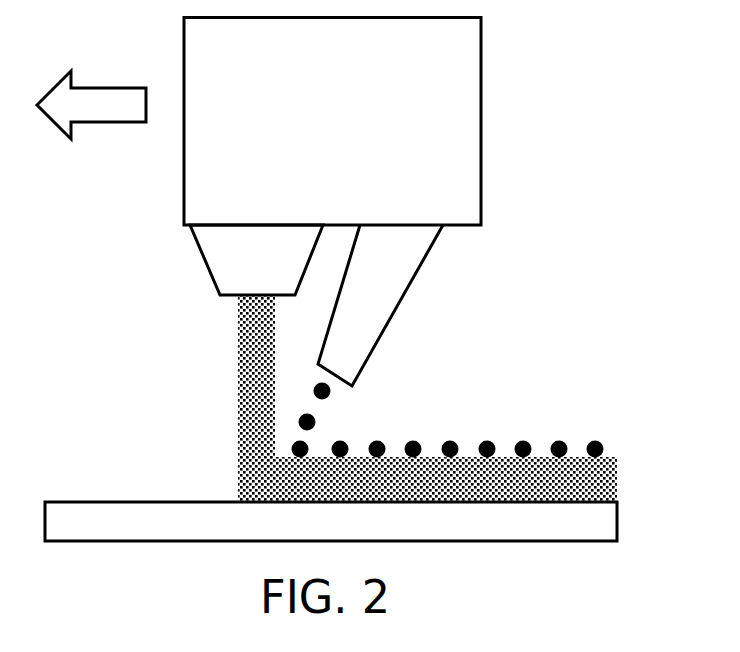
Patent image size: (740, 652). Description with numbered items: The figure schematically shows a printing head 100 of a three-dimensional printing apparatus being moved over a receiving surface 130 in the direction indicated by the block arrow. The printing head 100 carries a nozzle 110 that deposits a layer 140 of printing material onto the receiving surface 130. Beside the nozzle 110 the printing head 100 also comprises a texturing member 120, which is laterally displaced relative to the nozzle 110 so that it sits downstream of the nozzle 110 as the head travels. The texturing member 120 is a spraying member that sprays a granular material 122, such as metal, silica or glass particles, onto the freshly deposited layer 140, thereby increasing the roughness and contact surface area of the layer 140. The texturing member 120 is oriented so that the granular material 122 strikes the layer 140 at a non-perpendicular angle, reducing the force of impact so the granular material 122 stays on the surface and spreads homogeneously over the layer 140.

The printing head 100 is at (481, 158).
The nozzle 110 is at (209, 269).
The texturing member 120 is at (410, 270).
The granular material 122 is at (603, 450).
The receiving surface 130 is at (608, 527).
The layer 140 is at (503, 480).